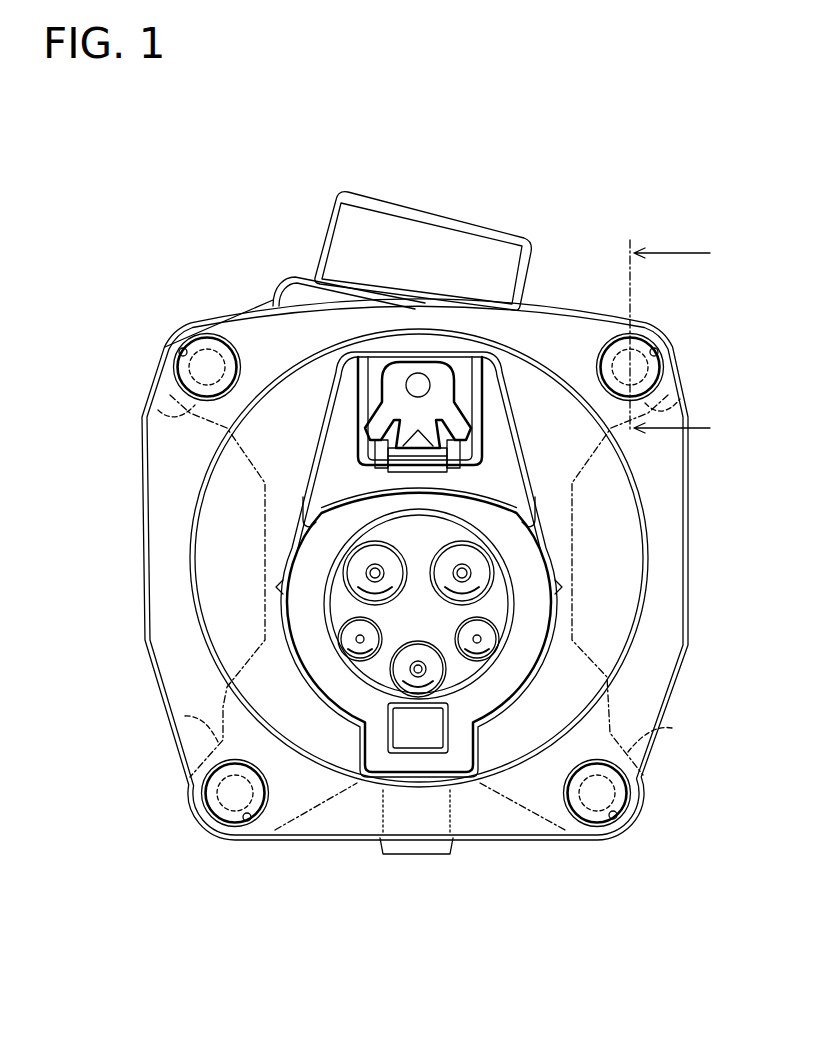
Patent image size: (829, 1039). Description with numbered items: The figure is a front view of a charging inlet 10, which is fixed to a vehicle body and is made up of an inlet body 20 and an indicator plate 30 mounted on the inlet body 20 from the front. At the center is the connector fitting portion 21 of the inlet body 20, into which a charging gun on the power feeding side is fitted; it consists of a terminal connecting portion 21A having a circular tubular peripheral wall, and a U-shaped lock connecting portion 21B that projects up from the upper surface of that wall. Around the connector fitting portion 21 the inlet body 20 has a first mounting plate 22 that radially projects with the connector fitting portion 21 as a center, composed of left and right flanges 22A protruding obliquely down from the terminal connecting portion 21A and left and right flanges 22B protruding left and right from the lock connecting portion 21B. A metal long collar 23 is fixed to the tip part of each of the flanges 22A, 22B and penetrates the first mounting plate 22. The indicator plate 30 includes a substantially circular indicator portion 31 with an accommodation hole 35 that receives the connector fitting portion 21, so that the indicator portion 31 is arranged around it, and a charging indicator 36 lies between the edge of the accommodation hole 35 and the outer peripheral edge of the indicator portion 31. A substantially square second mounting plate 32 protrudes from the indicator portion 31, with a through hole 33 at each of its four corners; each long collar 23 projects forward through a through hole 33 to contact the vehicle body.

The charging inlet 10 is at (421, 110).
The inlet body 20 is at (261, 290).
The connector fitting portion 21 is at (545, 546).
The terminal connecting portion 21A is at (508, 586).
The lock connecting portion 21B is at (498, 462).
The first mounting plate 22 is at (570, 604).
The flanges 22A is at (185, 716).
The flanges 22B is at (160, 412).
The long collar 23 is at (212, 343).
The indicator plate 30 is at (570, 338).
The indicator portion 31 is at (197, 476).
The second mounting plate 32 is at (160, 503).
The through hole 33 is at (180, 353).
The accommodation hole 35 is at (283, 593).
The charging indicator 36 is at (235, 563).